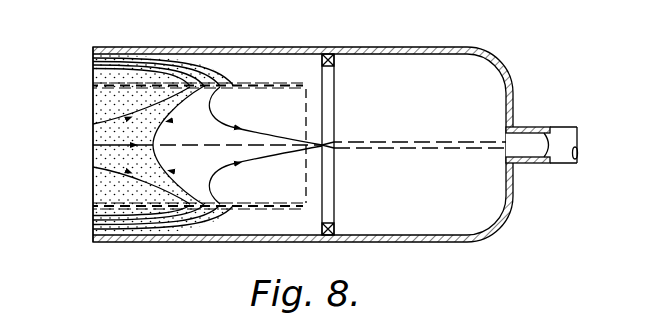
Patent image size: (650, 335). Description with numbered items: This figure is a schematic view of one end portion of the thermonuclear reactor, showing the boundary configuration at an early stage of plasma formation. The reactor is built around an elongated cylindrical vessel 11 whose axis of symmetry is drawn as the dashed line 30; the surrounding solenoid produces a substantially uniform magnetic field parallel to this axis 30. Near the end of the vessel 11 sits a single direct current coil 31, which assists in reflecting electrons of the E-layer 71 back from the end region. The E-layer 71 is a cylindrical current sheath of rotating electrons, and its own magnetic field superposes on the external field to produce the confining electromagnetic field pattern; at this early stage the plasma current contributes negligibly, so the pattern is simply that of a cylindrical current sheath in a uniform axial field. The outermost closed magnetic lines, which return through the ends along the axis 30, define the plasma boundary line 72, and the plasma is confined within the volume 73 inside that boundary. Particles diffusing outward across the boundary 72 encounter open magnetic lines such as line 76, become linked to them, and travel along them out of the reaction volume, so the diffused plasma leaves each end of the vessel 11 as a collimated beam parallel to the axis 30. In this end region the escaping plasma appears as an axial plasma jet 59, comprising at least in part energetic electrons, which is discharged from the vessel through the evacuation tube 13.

The cylindrical vessel 11 is at (407, 47).
The evacuation conduit 13 is at (553, 127).
The axis of symmetry 30 is at (400, 150).
The direct current coil 31 is at (334, 113).
The plasma jet 59 is at (454, 150).
The E-layer 71 is at (265, 89).
The plasma boundary line 72 is at (173, 117).
The confined plasma volume 73 is at (127, 167).
The open magnetic line 76 is at (212, 187).